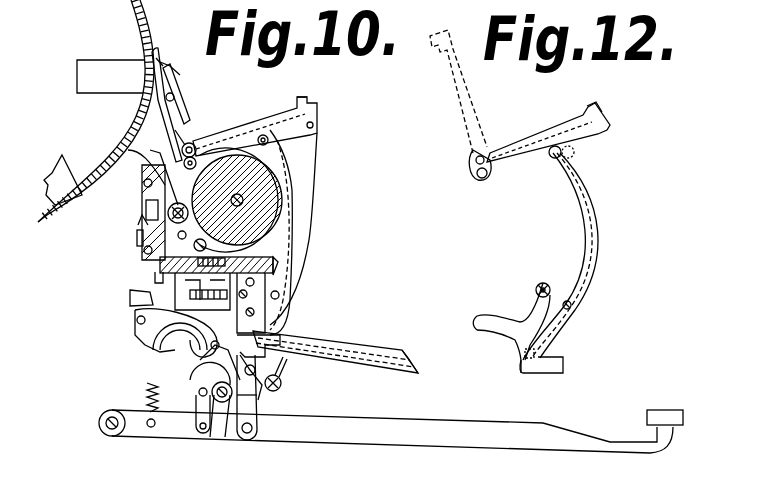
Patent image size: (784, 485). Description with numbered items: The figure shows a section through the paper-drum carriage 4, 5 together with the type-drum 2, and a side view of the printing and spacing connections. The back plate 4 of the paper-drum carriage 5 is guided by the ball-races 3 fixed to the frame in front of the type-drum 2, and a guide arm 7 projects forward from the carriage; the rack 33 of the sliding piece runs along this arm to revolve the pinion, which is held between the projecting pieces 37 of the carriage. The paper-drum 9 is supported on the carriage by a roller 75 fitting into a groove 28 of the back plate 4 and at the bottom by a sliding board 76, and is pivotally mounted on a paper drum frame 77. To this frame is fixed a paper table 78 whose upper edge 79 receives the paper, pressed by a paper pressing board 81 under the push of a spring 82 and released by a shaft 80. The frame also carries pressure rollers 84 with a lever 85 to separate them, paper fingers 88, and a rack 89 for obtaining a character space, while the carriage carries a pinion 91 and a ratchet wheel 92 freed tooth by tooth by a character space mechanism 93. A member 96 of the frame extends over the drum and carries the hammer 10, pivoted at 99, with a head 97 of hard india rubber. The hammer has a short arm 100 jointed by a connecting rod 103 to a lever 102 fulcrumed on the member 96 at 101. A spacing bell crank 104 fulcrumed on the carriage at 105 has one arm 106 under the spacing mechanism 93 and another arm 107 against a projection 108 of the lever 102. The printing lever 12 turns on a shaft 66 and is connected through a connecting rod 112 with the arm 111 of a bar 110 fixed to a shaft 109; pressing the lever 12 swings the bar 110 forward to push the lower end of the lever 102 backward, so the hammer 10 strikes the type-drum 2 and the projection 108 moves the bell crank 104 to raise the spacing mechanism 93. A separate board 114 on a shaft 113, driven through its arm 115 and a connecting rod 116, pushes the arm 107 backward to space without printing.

In FIG. 10, the type-drum 2 is at (142, 18).
In FIG. 10, the ball-race 3 is at (176, 203).
In FIG. 10, the back plate 4 is at (137, 240).
In FIG. 10, the paper-drum carriage 5 is at (285, 268).
In FIG. 10, the guide arm 7 is at (420, 360).
In FIG. 10, the paper-drum 9 is at (262, 195).
In FIG. 10, the hammer 10 is at (285, 118).
In FIG. 12, the hammer 10 is at (594, 130).
In FIG. 10, the printing lever 12 is at (408, 420).
In FIG. 10, the groove 28 is at (146, 202).
In FIG. 10, the rack 33 is at (150, 300).
In FIG. 10, the projecting piece 37 is at (150, 350).
In FIG. 10, the shaft 66 is at (108, 432).
In FIG. 10, the roller 75 is at (145, 212).
In FIG. 10, the sliding board 76 is at (295, 248).
In FIG. 10, the paper drum frame 77 is at (194, 143).
In FIG. 10, the paper table 78 is at (187, 147).
In FIG. 10, the upper edge 79 is at (157, 52).
In FIG. 10, the shaft 80 is at (175, 68).
In FIG. 10, the paper pressing board 81 is at (163, 57).
In FIG. 10, the spring 82 is at (186, 92).
In FIG. 10, the pressure rollers 84 is at (140, 222).
In FIG. 10, the lever 85 is at (150, 153).
In FIG. 10, the paper fingers 88 is at (280, 200).
In FIG. 10, the rack 89 is at (178, 285).
In FIG. 10, the pinion 91 is at (190, 300).
In FIG. 10, the ratchet wheel 92 is at (175, 320).
In FIG. 10, the character space mechanism 93 is at (138, 332).
In FIG. 10, the member 96 is at (309, 178).
In FIG. 10, the head 97 is at (306, 100).
In FIG. 12, the head 97 is at (606, 110).
In FIG. 10, the pivot 99 is at (197, 158).
In FIG. 12, the pivot 99 is at (472, 158).
In FIG. 10, the short arm 100 is at (155, 150).
In FIG. 12, the short arm 100 is at (476, 174).
In FIG. 10, the fulcrum 101 is at (280, 298).
In FIG. 12, the fulcrum 101 is at (572, 305).
In FIG. 10, the lever 102 is at (306, 230).
In FIG. 12, the lever 102 is at (596, 242).
In FIG. 10, the connecting rod 103 is at (270, 145).
In FIG. 12, the connecting rod 103 is at (548, 158).
In FIG. 10, the spacing bell crank 104 is at (256, 312).
In FIG. 12, the spacing bell crank 104 is at (538, 292).
In FIG. 10, the fulcrum 105 is at (256, 283).
In FIG. 12, the fulcrum 105 is at (544, 283).
In FIG. 10, the arm 106 is at (180, 339).
In FIG. 12, the arm 106 is at (480, 324).
In FIG. 10, the arm 107 is at (205, 352).
In FIG. 12, the arm 107 is at (520, 370).
In FIG. 10, the projection 108 is at (283, 352).
In FIG. 12, the projection 108 is at (536, 355).
In FIG. 10, the shaft 109 is at (281, 388).
In FIG. 10, the bar 110 is at (285, 366).
In FIG. 10, the arm 111 is at (257, 395).
In FIG. 10, the connecting rod 112 is at (253, 410).
In FIG. 10, the shaft 113 is at (220, 402).
In FIG. 10, the board 114 is at (253, 418).
In FIG. 10, the arm 115 is at (203, 383).
In FIG. 10, the connecting rod 116 is at (198, 405).